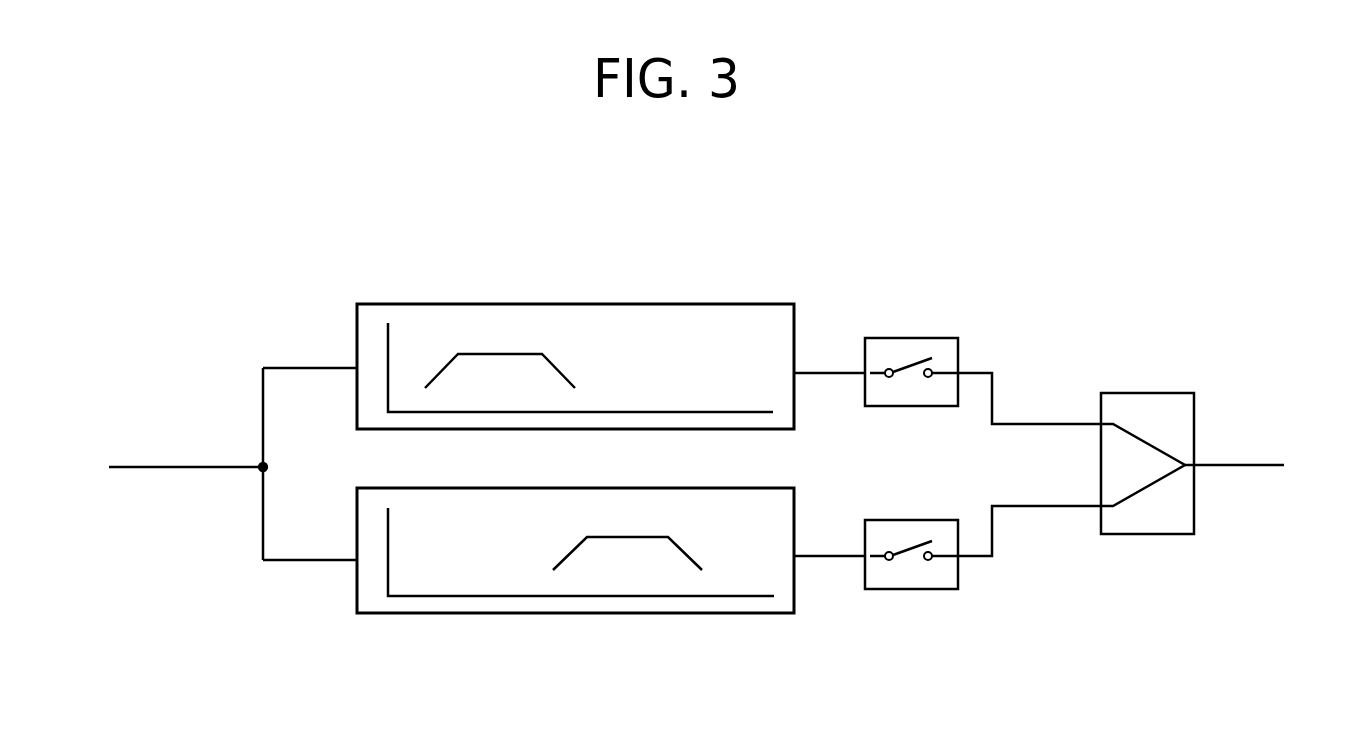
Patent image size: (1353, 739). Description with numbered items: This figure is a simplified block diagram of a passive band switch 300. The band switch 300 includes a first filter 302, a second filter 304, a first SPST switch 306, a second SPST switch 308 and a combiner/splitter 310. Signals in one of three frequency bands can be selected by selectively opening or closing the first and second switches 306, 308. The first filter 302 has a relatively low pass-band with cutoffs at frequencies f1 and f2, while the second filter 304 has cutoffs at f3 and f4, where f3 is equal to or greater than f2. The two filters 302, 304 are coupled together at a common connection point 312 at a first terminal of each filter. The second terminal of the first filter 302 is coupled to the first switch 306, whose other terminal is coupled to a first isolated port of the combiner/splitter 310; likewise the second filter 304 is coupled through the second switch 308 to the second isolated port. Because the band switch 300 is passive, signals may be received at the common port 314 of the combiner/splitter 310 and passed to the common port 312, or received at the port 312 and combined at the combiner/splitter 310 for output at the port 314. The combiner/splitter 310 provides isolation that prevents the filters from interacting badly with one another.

The passive band switch 300 is at (268, 210).
The first filter 302 is at (438, 303).
The second filter 304 is at (420, 615).
The first SPST switch 306 is at (902, 337).
The second SPST switch 308 is at (960, 590).
The combiner/splitter 310 is at (1170, 536).
The common connection point 312 is at (263, 438).
The common port 314 is at (1250, 463).